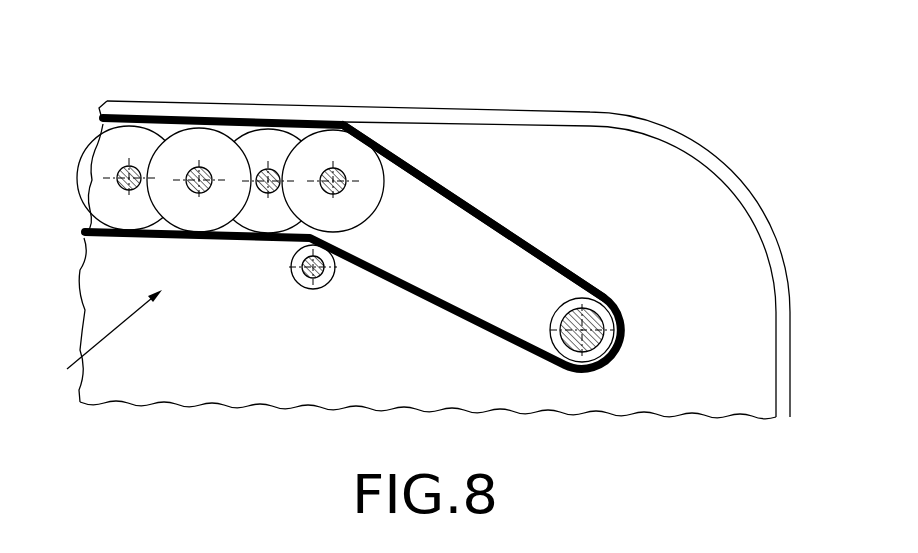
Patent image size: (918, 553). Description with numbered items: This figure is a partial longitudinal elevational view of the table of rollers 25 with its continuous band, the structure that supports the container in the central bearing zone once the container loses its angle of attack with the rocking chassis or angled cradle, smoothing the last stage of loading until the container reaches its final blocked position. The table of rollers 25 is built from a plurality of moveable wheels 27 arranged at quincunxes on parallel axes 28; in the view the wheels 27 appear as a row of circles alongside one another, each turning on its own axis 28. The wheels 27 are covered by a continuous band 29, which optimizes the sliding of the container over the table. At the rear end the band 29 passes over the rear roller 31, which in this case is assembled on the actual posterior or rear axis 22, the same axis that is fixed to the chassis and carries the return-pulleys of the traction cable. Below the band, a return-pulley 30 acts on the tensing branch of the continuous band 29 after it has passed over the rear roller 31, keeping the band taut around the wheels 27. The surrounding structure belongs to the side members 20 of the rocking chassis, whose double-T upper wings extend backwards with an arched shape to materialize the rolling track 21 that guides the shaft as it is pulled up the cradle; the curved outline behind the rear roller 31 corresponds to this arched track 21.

The side members 20 is at (205, 373).
The rolling track 21 is at (715, 160).
The rear axis 22 is at (620, 303).
The table of rollers 25 is at (92, 343).
The moveable wheels 27 is at (177, 157).
The parallel axes 28 is at (188, 187).
The continuous band 29 is at (500, 215).
The return-pulley 30 is at (307, 292).
The rear roller 31 is at (612, 322).